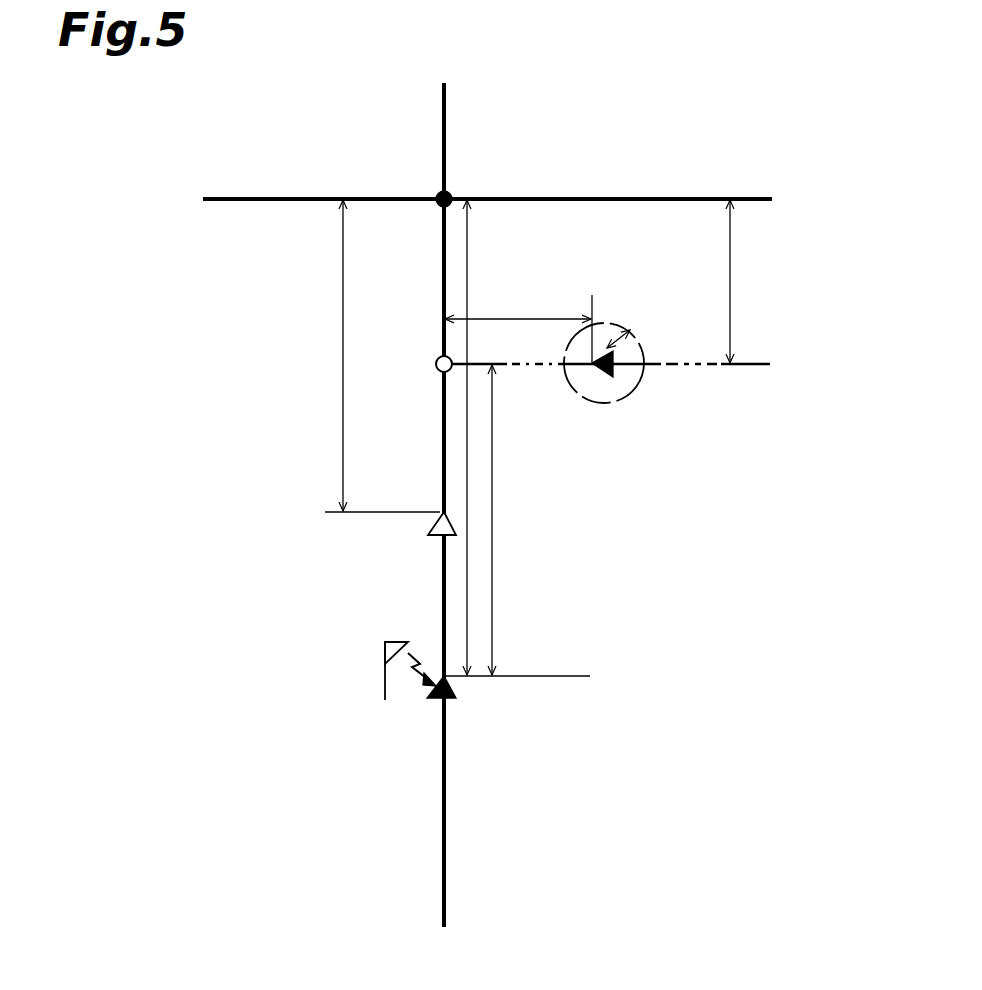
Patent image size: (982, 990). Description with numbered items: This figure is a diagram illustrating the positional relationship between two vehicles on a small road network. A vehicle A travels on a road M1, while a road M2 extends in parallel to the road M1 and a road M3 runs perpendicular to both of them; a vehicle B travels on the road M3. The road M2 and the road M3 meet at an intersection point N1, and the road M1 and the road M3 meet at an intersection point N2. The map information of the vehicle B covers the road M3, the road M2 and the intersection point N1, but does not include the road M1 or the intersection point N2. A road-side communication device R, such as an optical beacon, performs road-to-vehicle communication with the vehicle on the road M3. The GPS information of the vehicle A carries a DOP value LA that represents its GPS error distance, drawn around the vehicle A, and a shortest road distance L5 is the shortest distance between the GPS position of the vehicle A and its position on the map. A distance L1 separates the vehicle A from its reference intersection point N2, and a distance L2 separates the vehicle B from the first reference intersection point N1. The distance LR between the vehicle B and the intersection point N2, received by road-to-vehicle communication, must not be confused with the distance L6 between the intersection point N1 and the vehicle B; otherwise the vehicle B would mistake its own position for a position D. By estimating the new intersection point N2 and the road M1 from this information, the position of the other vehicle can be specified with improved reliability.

The road M1 is at (740, 366).
The road M2 is at (738, 197).
The road M3 is at (446, 795).
The intersection point N1 is at (440, 197).
The intersection point N2 is at (435, 364).
The distance L1 is at (543, 318).
The distance L2 is at (470, 277).
The shortest road distance L5 is at (733, 281).
The distance L6 is at (340, 358).
The distance LR is at (494, 520).
The DOP value LA is at (622, 346).
The vehicle A is at (605, 348).
The vehicle B is at (452, 684).
The position D is at (432, 522).
The road-side communication device R is at (382, 652).